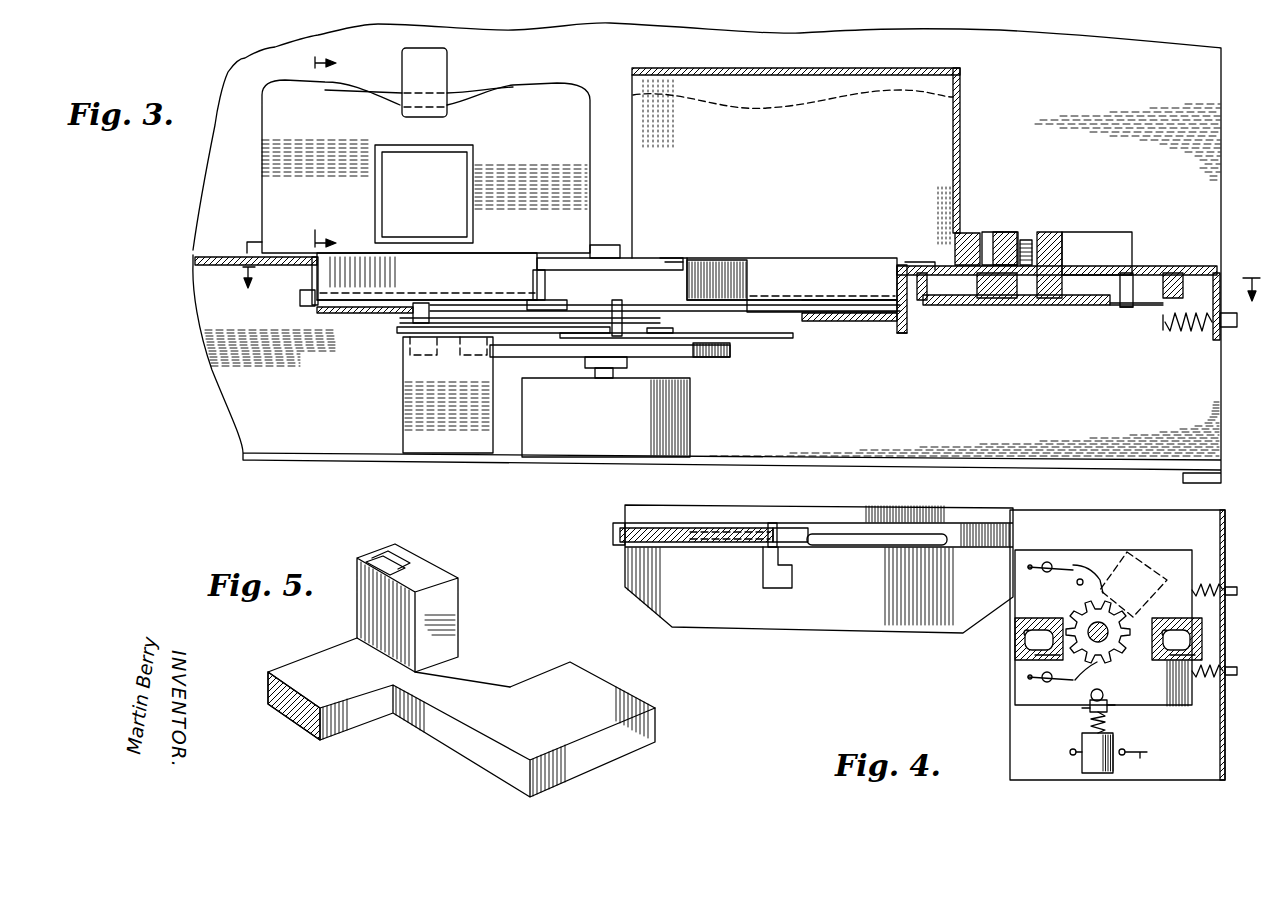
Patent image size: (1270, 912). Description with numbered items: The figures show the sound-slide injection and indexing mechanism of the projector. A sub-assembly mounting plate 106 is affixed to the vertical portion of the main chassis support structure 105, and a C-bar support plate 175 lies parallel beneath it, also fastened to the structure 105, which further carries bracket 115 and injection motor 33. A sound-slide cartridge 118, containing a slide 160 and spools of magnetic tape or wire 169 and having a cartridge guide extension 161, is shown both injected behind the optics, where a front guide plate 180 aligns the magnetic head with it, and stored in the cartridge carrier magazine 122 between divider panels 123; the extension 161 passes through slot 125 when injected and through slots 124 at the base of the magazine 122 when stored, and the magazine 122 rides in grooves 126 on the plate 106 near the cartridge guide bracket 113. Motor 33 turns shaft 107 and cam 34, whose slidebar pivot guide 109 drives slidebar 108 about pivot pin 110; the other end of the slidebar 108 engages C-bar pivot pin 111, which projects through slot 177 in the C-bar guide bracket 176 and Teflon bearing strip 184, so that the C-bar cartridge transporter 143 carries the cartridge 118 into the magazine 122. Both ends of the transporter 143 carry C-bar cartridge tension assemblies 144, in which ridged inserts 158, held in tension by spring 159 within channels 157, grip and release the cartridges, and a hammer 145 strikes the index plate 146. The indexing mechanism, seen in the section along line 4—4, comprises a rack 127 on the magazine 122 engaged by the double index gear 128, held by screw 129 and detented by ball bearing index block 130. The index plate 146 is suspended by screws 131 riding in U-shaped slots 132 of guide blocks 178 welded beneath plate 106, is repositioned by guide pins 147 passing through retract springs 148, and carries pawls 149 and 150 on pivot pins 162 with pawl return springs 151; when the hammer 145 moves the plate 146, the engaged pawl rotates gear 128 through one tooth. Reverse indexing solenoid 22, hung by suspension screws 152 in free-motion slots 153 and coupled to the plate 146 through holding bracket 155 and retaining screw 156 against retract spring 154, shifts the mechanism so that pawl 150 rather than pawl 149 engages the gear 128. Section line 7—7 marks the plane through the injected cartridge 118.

In FIG. 3, the main chassis support structure 105 is at (516, 32).
In FIG. 3, the sub-assembly mounting plate 106 is at (197, 266).
In FIG. 4, the sub-assembly mounting plate 106 is at (1010, 718).
In FIG. 3, the shaft 107 is at (628, 371).
In FIG. 3, the slidebar 108 is at (788, 338).
In FIG. 3, the slidebar pivot guide 109 is at (731, 350).
In FIG. 3, the slidebar pivot pin 110 is at (616, 307).
In FIG. 3, the C-bar pivot pin 111 is at (397, 331).
In FIG. 3, the sound-slide cartridge guide bracket 113 is at (247, 242).
In FIG. 3, the bracket 115 is at (403, 401).
In FIG. 3, the sound-slide cartridge 118 is at (538, 92).
In FIG. 3, the cartridge carrier magazine 122 is at (852, 68).
In FIG. 3, the magazine divider panels 123 is at (793, 163).
In FIG. 3, the slots 124 is at (714, 262).
In FIG. 3, the slot 125 is at (597, 245).
In FIG. 3, the grooves 126 is at (672, 260).
In FIG. 3, the rack 127 is at (969, 233).
In FIG. 3, the double index gear 128 is at (1045, 232).
In FIG. 4, the double index gear 128 is at (1112, 650).
In FIG. 3, the index gear mounting screw 129 is at (1028, 232).
In FIG. 4, the index gear mounting screw 129 is at (1092, 622).
In FIG. 3, the ball bearing index gear detent 130 is at (1102, 234).
In FIG. 4, the ball bearing index gear detent 130 is at (1140, 560).
In FIG. 3, the indexing plate suspension screws 131 is at (898, 300).
In FIG. 4, the indexing plate suspension screws 131 is at (1024, 632).
In FIG. 3, the index slots 132 is at (926, 300).
In FIG. 4, the index slots 132 is at (1030, 641).
In FIG. 3, the C-bar cartridge transporter 143 is at (304, 306).
In FIG. 4, the C-bar cartridge transporter 143 is at (740, 549).
In FIG. 5, the C-bar cartridge transporter 143 is at (308, 656).
In FIG. 3, the C-bar cartridge tension assemblies 144 is at (311, 283).
In FIG. 4, the C-bar cartridge tension assemblies 144 is at (613, 524).
In FIG. 5, the C-bar cartridge tension assemblies 144 is at (447, 597).
In FIG. 3, the hammer 145 is at (563, 300).
In FIG. 4, the hammer 145 is at (791, 587).
In FIG. 5, the hammer 145 is at (622, 693).
In FIG. 3, the index plate 146 is at (1114, 298).
In FIG. 4, the index plate 146 is at (1176, 706).
In FIG. 3, the index plate guide pins 147 is at (1233, 327).
In FIG. 4, the index plate guide pins 147 is at (1233, 587).
In FIG. 4, the index plate retract springs 148 is at (1212, 585).
In FIG. 4, the pawl 149 is at (1090, 694).
In FIG. 4, the pawl 150 is at (1081, 579).
In FIG. 4, the pawl return springs 151 is at (1076, 563).
In FIG. 4, the solenoid suspension screws 152 is at (1071, 750).
In FIG. 4, the free motion slots 153 is at (1080, 762).
In FIG. 4, the solenoid retract spring 154 is at (1090, 722).
In FIG. 4, the index plate holding bracket 155 is at (1107, 706).
In FIG. 4, the retaining screw 156 is at (1082, 708).
In FIG. 5, the channels 157 is at (438, 573).
In FIG. 5, the end clamp ridged inserts 158 is at (358, 622).
In FIG. 5, the spring 159 is at (406, 562).
In FIG. 3, the slide 160 is at (460, 161).
In FIG. 3, the cartridge guide extension 161 is at (486, 256).
In FIG. 4, the cartridge guide extension 161 is at (678, 543).
In FIG. 4, the pawl mounting pivot pins 162 is at (1052, 562).
In FIG. 3, the magnetic tape or wire 169 is at (466, 91).
In FIG. 4, the C-bar support plate 175 is at (787, 622).
In FIG. 3, the C-bar guide bracket 176 is at (374, 312).
In FIG. 4, the C-bar guide bracket 176 is at (972, 548).
In FIG. 3, the slot 177 is at (780, 312).
In FIG. 4, the slot 177 is at (882, 542).
In FIG. 3, the guide blocks 178 is at (926, 302).
In FIG. 4, the guide blocks 178 is at (1030, 656).
In FIG. 3, the front guide plate 180 is at (441, 58).
In FIG. 3, the Teflon bearing strip 184 is at (335, 300).
In FIG. 4, the Teflon bearing strip 184 is at (997, 522).
In FIG. 4, the reverse indexing solenoid 22 is at (1097, 774).
In FIG. 3, the injection motor 33 is at (682, 421).
In FIG. 3, the cam 34 is at (712, 358).
In FIG. 3, the section line 4— 4 is at (749, 298).
In FIG. 3, the section line 7— 7 is at (329, 145).